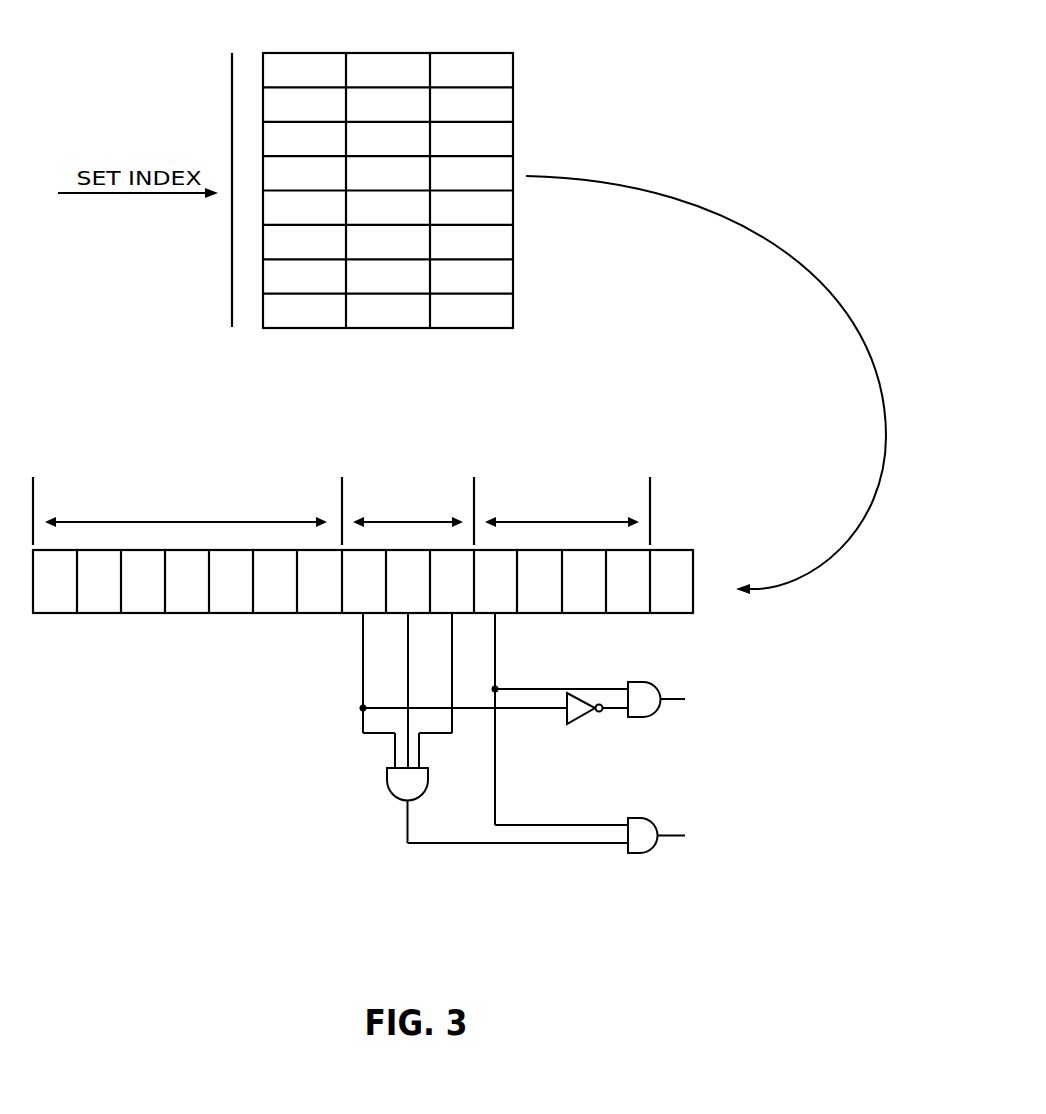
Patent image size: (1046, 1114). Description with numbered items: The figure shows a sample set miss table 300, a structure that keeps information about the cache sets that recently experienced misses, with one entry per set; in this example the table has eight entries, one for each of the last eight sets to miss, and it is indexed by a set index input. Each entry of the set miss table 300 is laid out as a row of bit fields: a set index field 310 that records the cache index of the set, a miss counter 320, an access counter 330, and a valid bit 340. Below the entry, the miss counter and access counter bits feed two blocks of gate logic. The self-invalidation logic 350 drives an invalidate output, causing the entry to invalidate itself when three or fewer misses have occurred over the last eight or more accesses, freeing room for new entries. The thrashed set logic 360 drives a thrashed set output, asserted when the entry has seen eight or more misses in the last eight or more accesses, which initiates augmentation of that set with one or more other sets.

The set miss table 300 is at (513, 103).
The set index field 310 is at (164, 465).
The miss counter 320 is at (391, 437).
The access counter 330 is at (548, 437).
The valid bit 340 is at (677, 550).
The self-invalidation logic 350 is at (557, 735).
The thrashed set logic 360 is at (392, 862).